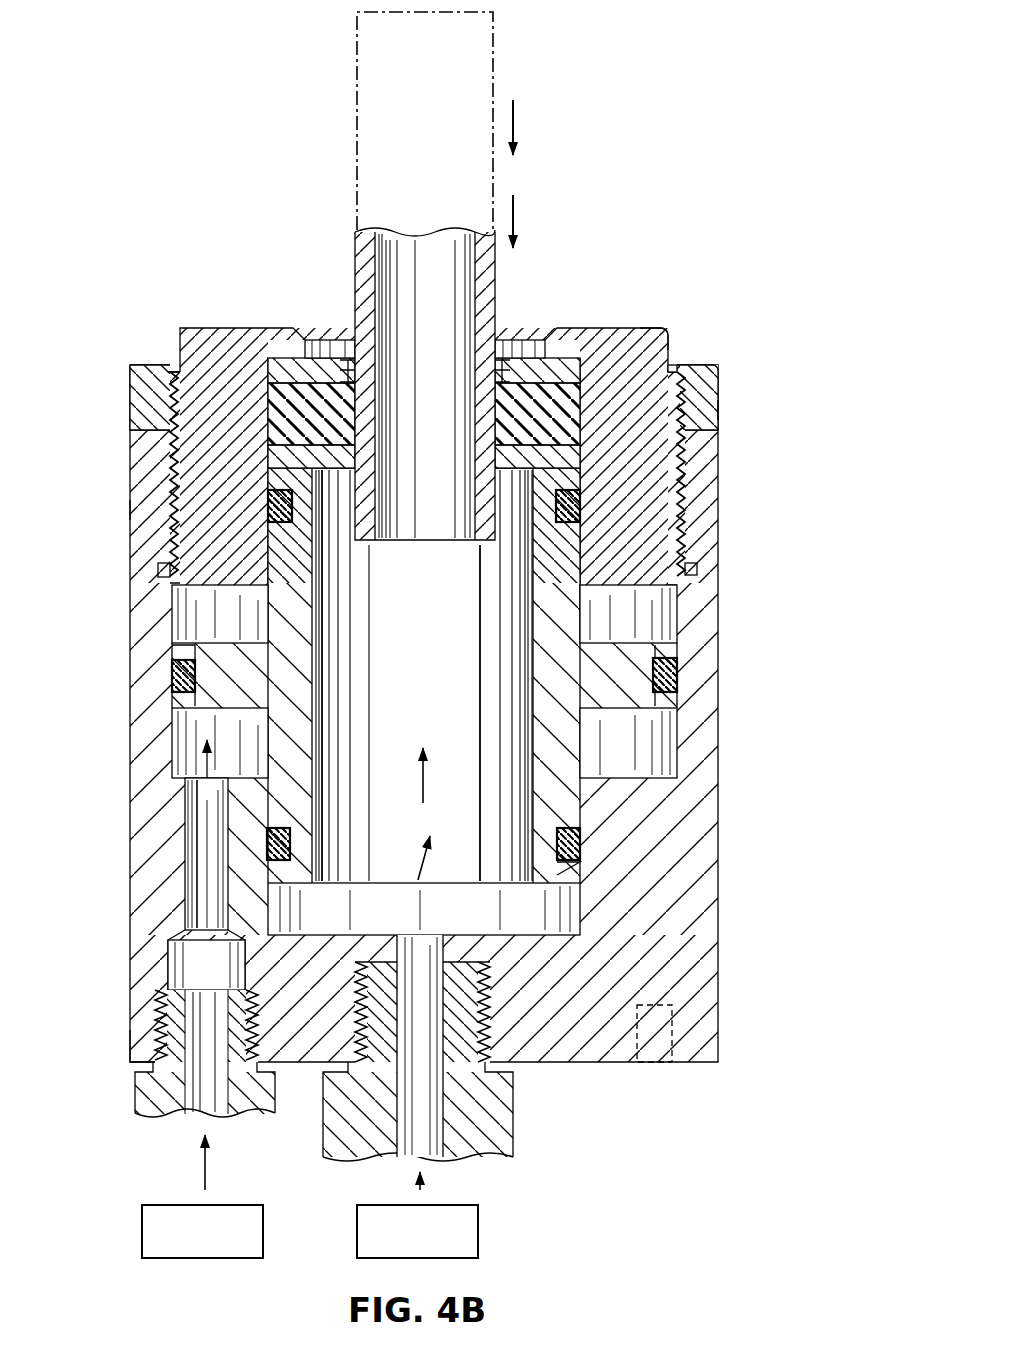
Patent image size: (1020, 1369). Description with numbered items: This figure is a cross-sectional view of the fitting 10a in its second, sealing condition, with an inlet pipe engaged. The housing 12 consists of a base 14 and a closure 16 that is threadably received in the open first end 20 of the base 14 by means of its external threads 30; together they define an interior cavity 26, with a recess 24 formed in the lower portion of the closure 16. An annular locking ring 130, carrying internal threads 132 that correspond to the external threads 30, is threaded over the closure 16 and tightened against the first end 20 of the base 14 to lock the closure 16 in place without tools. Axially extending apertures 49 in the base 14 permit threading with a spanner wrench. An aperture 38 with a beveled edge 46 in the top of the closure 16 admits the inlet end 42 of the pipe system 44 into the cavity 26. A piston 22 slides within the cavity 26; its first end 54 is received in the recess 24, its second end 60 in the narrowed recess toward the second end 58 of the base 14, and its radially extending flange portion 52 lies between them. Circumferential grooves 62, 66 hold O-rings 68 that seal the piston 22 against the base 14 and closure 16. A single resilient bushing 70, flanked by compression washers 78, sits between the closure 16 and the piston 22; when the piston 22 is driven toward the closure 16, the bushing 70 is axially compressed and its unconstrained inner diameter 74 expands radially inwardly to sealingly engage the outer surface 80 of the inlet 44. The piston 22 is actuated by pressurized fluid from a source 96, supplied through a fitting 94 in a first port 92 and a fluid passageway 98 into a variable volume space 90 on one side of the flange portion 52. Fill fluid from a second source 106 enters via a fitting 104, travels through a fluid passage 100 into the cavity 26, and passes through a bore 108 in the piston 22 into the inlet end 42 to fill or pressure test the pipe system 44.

The fitting 10a is at (760, 165).
The housing 12 is at (80, 503).
The base 14 is at (722, 768).
The closure 16 is at (668, 326).
The first end 20 is at (128, 435).
The piston 22 is at (258, 619).
The recess 24 is at (277, 565).
The interior cavity 26 is at (668, 623).
The external threads 30 is at (685, 458).
The aperture 38 is at (346, 346).
The inlet end 42 is at (492, 350).
The pipe system 44 is at (499, 66).
The beveled edge 46 is at (302, 340).
The axially extending apertures 49 is at (665, 1060).
The flange portion 52 is at (208, 648).
The first end 54 is at (580, 506).
The second end 58 is at (130, 1043).
The second end 60 is at (560, 888).
The groove 62 is at (272, 483).
The groove 66 is at (173, 650).
The O-rings 68 is at (268, 505).
The resilient bushing 70 is at (270, 393).
The inner diameter 74 is at (353, 432).
The compression washers 78 is at (305, 368).
The outer surface 80 is at (357, 185).
The variable volume space 90 is at (659, 760).
The first port 92 is at (428, 1083).
The fitting 94 is at (135, 1093).
The source of pressurized fluid 96 is at (142, 1242).
The fluid passageway 98 is at (185, 852).
The fluid passage 100 is at (422, 965).
The fitting 104 is at (513, 1140).
The source of pressurized fluid 106 is at (478, 1238).
The bore 108 is at (436, 683).
The locking ring 130 is at (722, 383).
The internal threads 132 is at (680, 368).